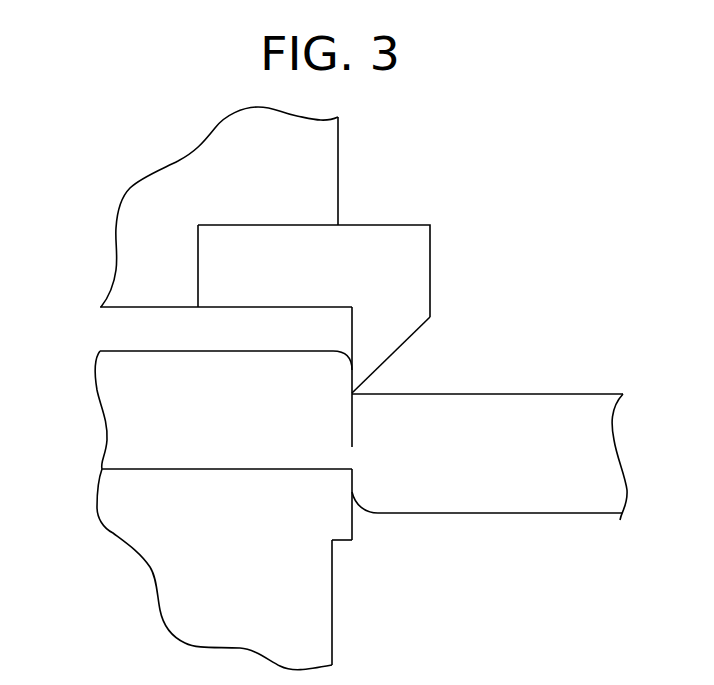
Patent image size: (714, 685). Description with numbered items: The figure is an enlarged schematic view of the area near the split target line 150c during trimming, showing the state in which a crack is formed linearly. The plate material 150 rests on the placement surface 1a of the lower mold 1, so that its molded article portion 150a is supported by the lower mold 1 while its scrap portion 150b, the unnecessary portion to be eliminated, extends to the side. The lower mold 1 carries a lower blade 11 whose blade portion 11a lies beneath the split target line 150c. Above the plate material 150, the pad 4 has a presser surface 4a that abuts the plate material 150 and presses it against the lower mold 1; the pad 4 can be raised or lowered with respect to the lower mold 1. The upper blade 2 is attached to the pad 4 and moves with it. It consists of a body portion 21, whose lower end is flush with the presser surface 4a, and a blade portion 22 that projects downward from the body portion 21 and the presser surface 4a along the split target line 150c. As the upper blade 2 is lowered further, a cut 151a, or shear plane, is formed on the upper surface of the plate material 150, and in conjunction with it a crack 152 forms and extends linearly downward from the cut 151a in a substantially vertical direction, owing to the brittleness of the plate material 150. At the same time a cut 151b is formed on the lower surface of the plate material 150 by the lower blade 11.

The lower mold 1 is at (318, 632).
The placement surface 1a is at (218, 468).
The lower blade 11 is at (343, 542).
The blade portion 11a is at (353, 522).
The upper blade 2 is at (398, 237).
The body portion 21 is at (258, 238).
The blade portion 22 is at (348, 346).
The pad 4 is at (330, 150).
The presser surface 4a is at (158, 308).
The plate material 150 is at (500, 393).
The molded article portion 150a is at (120, 406).
The scrap portion 150b is at (567, 410).
The split target line 150c is at (358, 392).
The cut 151a is at (355, 380).
The cut 151b is at (350, 478).
The crack 152 is at (355, 426).